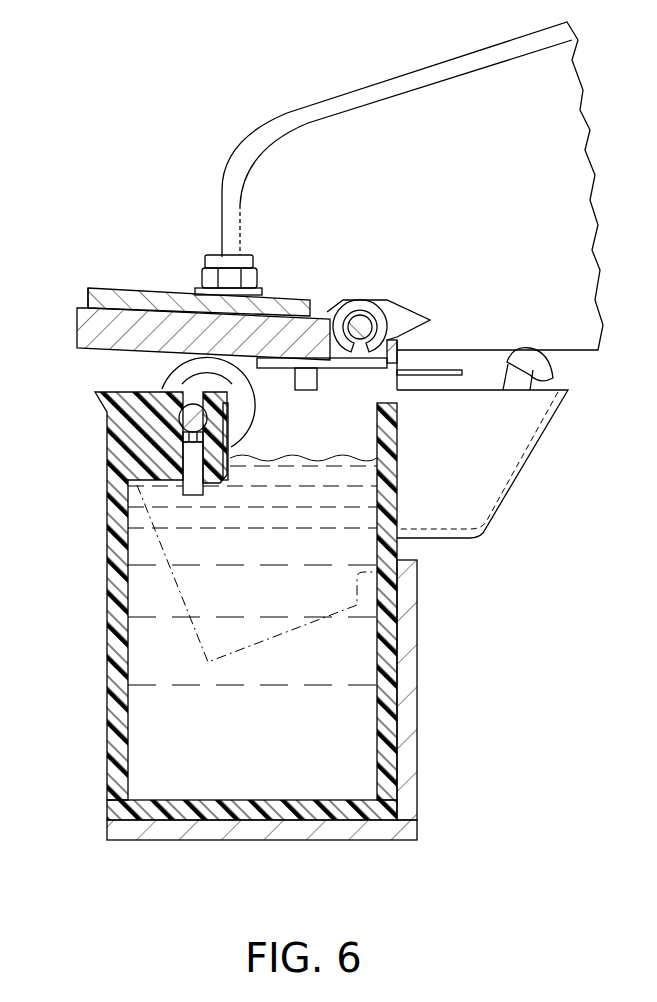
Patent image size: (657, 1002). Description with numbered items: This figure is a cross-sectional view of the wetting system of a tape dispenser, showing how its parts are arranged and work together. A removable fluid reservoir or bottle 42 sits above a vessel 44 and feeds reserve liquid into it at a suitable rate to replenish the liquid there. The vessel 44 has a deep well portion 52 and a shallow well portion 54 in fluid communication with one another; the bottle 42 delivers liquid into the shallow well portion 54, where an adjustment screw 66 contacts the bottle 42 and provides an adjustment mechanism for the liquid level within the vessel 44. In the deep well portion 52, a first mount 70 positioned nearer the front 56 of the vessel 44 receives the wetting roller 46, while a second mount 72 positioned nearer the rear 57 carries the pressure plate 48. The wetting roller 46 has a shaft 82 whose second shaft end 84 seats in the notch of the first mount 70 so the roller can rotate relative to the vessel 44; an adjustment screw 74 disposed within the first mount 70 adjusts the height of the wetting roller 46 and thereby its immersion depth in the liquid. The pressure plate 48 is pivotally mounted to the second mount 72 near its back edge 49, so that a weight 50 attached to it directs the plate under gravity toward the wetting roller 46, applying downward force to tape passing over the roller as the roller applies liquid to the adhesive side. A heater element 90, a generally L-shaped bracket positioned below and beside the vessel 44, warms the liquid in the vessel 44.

The fluid reservoir or bottle 42 is at (553, 178).
The vessel 44 is at (107, 703).
The wetting roller 46 is at (157, 383).
The pressure plate 48 is at (77, 336).
The back edge 49 is at (393, 385).
The weight 50 is at (137, 295).
The deep well portion 52 is at (347, 712).
The shallow well portion 54 is at (480, 497).
The front 56 is at (110, 807).
The rear 57 is at (397, 805).
The adjustment screw 66 is at (532, 352).
The first mount 70 is at (230, 427).
The second mount 72 is at (363, 327).
The adjustment screw 74 is at (193, 495).
The shaft 82 is at (232, 406).
The second shaft end 84 is at (180, 413).
The heater element 90 is at (407, 742).